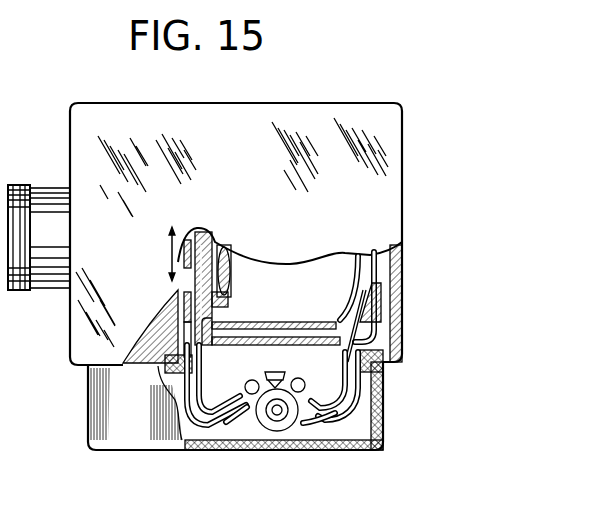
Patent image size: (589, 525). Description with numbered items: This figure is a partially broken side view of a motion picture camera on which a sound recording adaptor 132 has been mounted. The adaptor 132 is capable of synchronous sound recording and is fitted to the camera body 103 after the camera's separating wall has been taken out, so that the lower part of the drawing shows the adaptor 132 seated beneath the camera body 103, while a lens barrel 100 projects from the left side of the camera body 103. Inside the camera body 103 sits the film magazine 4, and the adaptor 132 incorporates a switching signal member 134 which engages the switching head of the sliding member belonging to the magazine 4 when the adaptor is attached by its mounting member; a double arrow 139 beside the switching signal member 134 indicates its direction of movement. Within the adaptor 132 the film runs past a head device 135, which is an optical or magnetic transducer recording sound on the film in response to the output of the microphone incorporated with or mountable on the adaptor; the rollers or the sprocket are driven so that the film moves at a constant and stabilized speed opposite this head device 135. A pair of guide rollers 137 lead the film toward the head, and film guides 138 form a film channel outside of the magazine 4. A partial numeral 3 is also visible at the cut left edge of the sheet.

The camera body 103 is at (358, 118).
The lens barrel 100 is at (48, 200).
The camera body 3 is at (7, 315).
The sliding direction arrow 139 is at (168, 248).
The magazine 4 is at (322, 275).
The switching signal member 134 is at (186, 332).
The head device 135 is at (277, 370).
The guide rollers 137 is at (299, 378).
The film guides 138 is at (247, 415).
The adaptor 132 is at (130, 430).